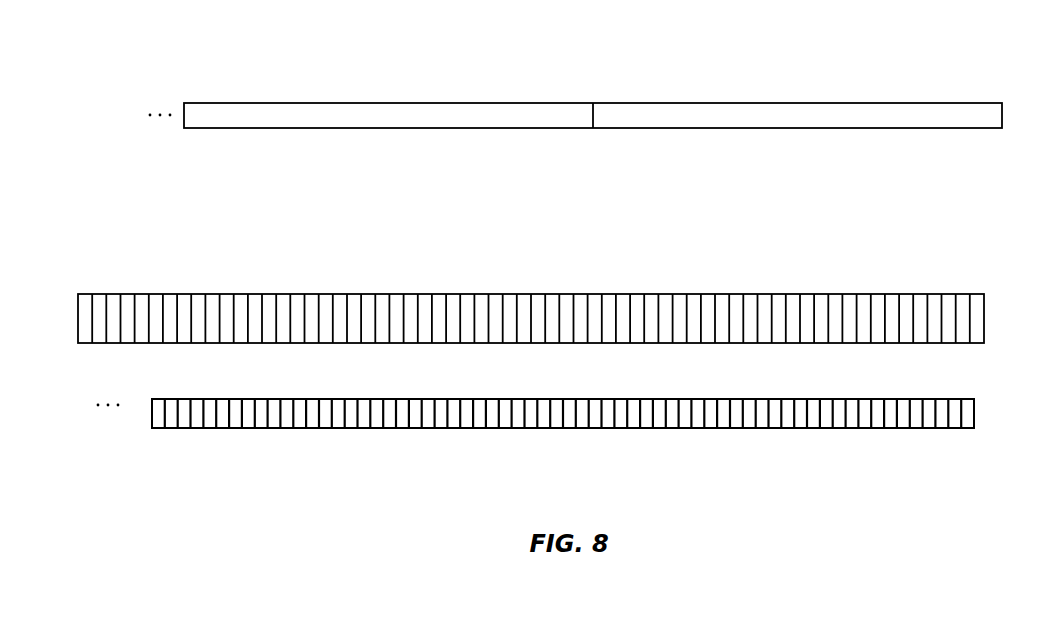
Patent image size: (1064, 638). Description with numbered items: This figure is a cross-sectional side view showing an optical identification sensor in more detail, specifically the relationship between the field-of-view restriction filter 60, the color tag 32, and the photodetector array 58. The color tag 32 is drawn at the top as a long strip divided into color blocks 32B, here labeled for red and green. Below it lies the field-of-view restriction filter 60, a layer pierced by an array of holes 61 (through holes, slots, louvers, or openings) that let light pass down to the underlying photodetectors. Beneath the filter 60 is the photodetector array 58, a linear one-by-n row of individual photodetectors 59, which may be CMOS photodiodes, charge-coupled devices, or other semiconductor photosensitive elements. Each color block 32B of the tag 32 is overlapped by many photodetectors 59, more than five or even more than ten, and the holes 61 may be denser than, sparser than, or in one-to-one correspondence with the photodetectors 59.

The color tag 32 is at (622, 84).
The color block 32B is at (400, 93).
The photodetector array 58 is at (591, 442).
The photodetectors 59 is at (902, 417).
The field-of-view restriction filter 60 is at (560, 286).
The holes 61 is at (87, 294).